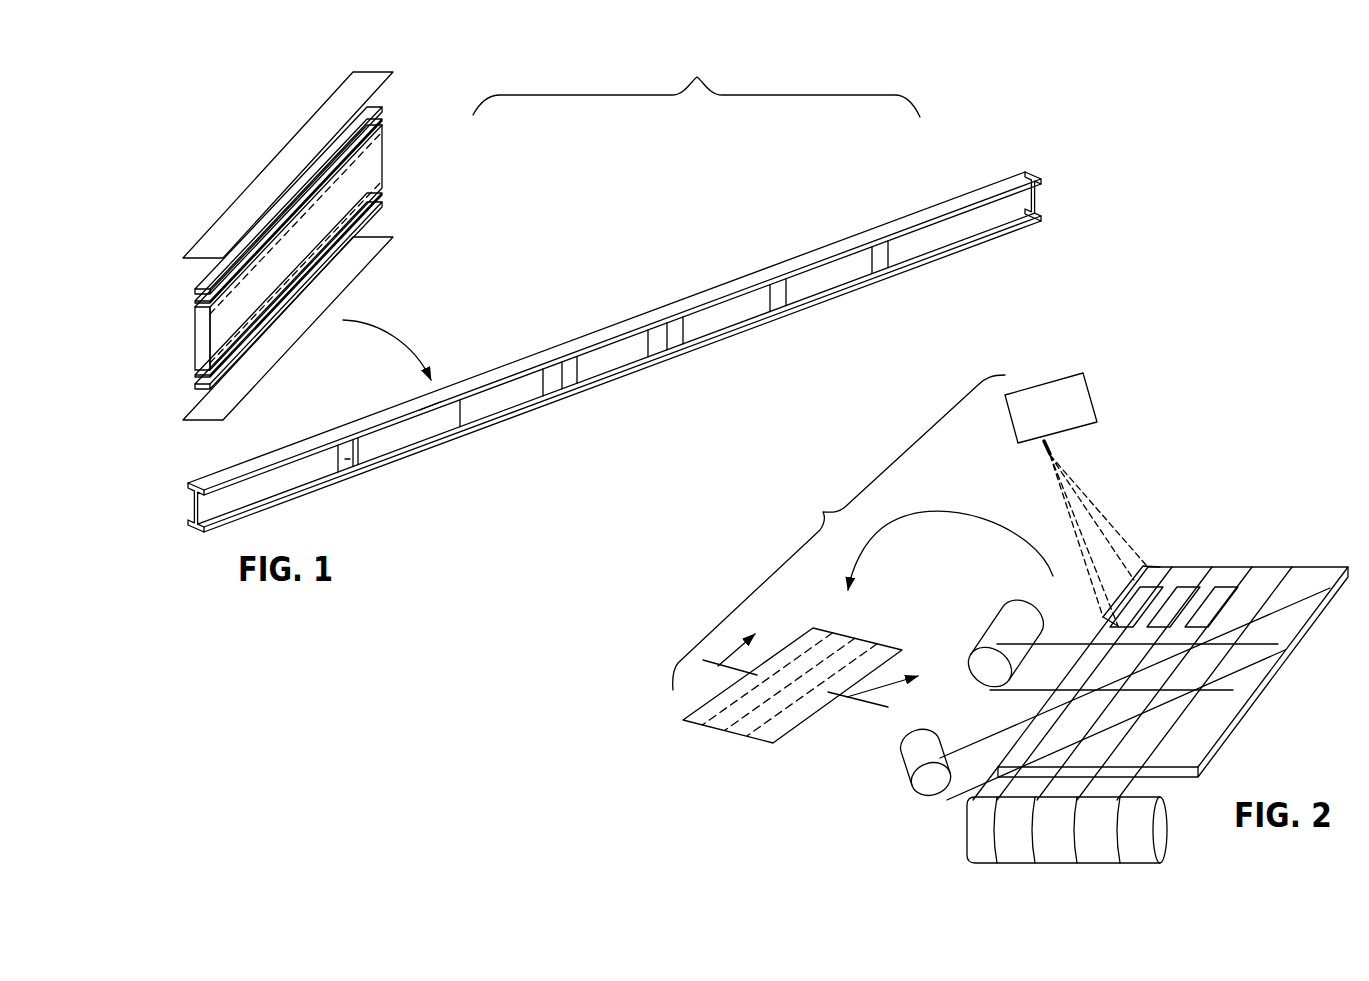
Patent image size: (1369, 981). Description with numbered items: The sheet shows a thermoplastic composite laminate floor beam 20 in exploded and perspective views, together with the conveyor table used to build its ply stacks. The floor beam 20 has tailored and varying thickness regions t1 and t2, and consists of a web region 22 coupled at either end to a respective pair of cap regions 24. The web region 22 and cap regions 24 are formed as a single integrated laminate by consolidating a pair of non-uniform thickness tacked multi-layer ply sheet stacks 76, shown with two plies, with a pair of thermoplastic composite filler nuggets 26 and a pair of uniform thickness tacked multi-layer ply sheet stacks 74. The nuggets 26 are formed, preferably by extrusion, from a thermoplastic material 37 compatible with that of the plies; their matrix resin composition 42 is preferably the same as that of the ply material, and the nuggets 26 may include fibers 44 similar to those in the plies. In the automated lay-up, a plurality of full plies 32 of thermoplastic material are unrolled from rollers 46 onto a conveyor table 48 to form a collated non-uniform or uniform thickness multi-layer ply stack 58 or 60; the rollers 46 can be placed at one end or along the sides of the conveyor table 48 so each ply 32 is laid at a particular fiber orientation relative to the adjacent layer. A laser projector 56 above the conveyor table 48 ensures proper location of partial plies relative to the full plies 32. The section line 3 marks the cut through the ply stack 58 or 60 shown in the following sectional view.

In FIG. 1, the thermoplastic composite laminate floor beam 20 is at (657, 321).
In FIG. 1, the web region 22 is at (1030, 199).
In FIG. 1, the cap regions 24 is at (1013, 180).
In FIG. 1, the thermoplastic composite filler nuggets 26 is at (277, 250).
In FIG. 1, the thermoplastic material 37 is at (368, 108).
In FIG. 1, the matrix resin composition 42 is at (368, 198).
In FIG. 1, the fibers 44 is at (364, 216).
In FIG. 1, the uniform thickness tacked multi-layer ply sheet stacks 74 is at (225, 228).
In FIG. 1, the non-uniform thickness tacked multi-layer ply sheet stacks 76 is at (196, 337).
In FIG. 1, the thickness region t1 is at (380, 443).
In FIG. 1, the thickness region t2 is at (345, 459).
In FIG. 2, the full ply 32 is at (1162, 775).
In FIG. 2, the roller 46 is at (988, 667).
In FIG. 2, the conveyor table 48 is at (1246, 710).
In FIG. 2, the laser projector 56 is at (1094, 392).
In FIG. 2, the untacked multi-layer ply sheet stack 58 is at (792, 737).
In FIG. 2, the untacked multi-layer ply sheet stack 60 is at (760, 752).
In FIG. 2, the section line 3- 3 is at (802, 687).